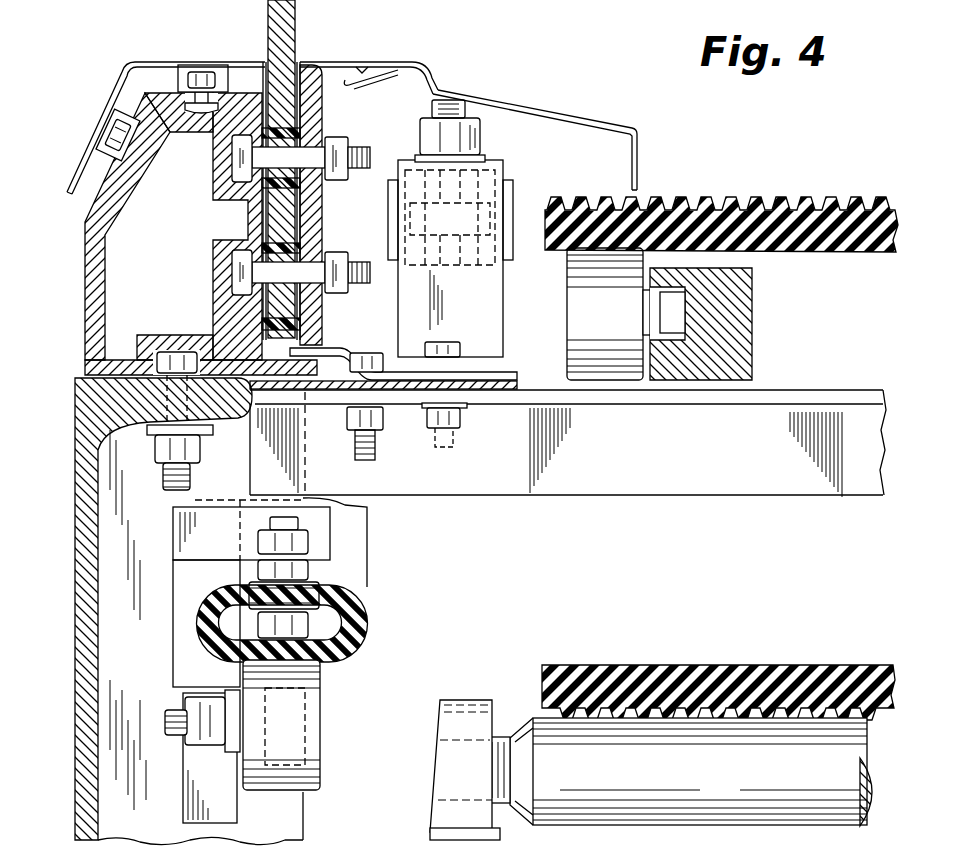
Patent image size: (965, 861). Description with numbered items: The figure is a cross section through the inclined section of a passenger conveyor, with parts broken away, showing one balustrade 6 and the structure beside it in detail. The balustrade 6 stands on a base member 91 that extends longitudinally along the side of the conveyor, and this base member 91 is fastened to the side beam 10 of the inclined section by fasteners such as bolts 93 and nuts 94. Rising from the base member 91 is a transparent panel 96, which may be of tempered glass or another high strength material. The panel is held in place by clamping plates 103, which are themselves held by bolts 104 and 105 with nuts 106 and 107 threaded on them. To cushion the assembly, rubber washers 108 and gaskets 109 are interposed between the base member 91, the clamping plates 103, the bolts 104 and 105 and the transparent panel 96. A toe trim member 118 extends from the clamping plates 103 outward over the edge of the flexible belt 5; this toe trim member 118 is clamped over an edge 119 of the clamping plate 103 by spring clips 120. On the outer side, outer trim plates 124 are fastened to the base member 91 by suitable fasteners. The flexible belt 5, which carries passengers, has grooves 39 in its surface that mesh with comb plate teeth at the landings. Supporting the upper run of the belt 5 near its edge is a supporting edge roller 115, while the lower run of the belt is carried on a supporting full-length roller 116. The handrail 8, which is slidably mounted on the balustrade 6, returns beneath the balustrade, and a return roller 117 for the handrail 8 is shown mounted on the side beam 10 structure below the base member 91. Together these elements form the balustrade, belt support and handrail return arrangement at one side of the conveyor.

The flexible belt 5 is at (752, 197).
The balustrade 6 is at (190, 62).
The handrail 8 is at (366, 627).
The side beam 10 is at (78, 668).
The grooves 39 is at (700, 197).
The base member 91 is at (88, 238).
The bolts 93 is at (162, 478).
The nuts 94 is at (157, 452).
The transparent panel 96 is at (298, 6).
The clamping plates 103 is at (318, 100).
The bolt 104 is at (374, 287).
The bolt 105 is at (366, 150).
The nut 106 is at (337, 303).
The nut 107 is at (335, 183).
The rubber washers 108 is at (290, 130).
The gaskets 109 is at (260, 217).
The supporting edge rollers 115 is at (567, 290).
The supporting full-length rollers 116 is at (651, 770).
The return rollers 117 is at (318, 784).
The toe trim member 118 is at (552, 108).
The edge 119 is at (362, 70).
The spring clips 120 is at (385, 79).
The outer trim plates 124 is at (120, 85).